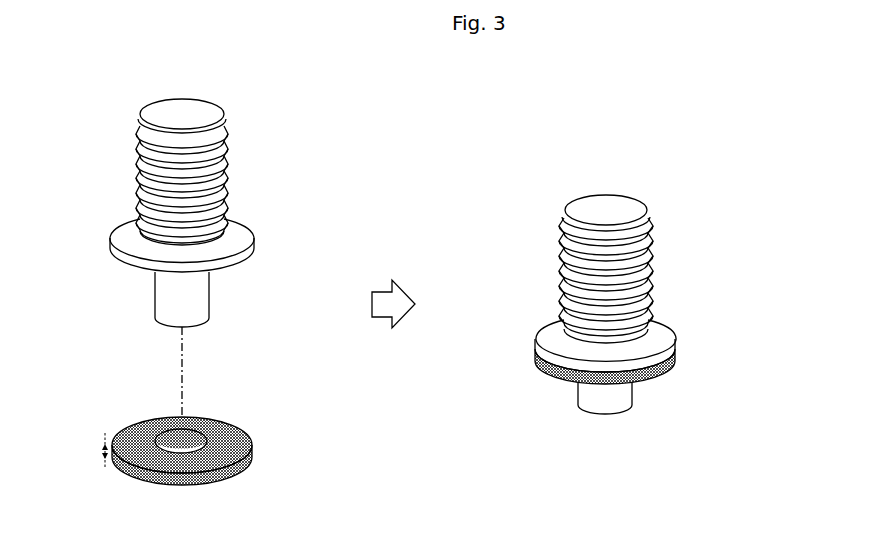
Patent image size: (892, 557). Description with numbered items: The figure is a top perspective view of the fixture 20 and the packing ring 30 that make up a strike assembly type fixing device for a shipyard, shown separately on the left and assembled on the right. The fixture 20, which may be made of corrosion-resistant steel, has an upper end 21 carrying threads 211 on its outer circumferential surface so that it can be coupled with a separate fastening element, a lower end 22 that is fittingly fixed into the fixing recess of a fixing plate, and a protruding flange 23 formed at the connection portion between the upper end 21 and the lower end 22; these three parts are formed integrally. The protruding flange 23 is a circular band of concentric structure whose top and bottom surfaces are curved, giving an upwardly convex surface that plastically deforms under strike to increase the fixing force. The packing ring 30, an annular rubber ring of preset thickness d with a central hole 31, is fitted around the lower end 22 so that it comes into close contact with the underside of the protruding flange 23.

The fixture 20 is at (112, 143).
The upper end 21 is at (225, 129).
The thread 211 is at (232, 158).
The lower end 22 is at (190, 295).
The protruding flange 23 is at (232, 233).
The packing ring 30 is at (247, 452).
The washer hole 31 is at (207, 420).
The thickness d is at (95, 450).